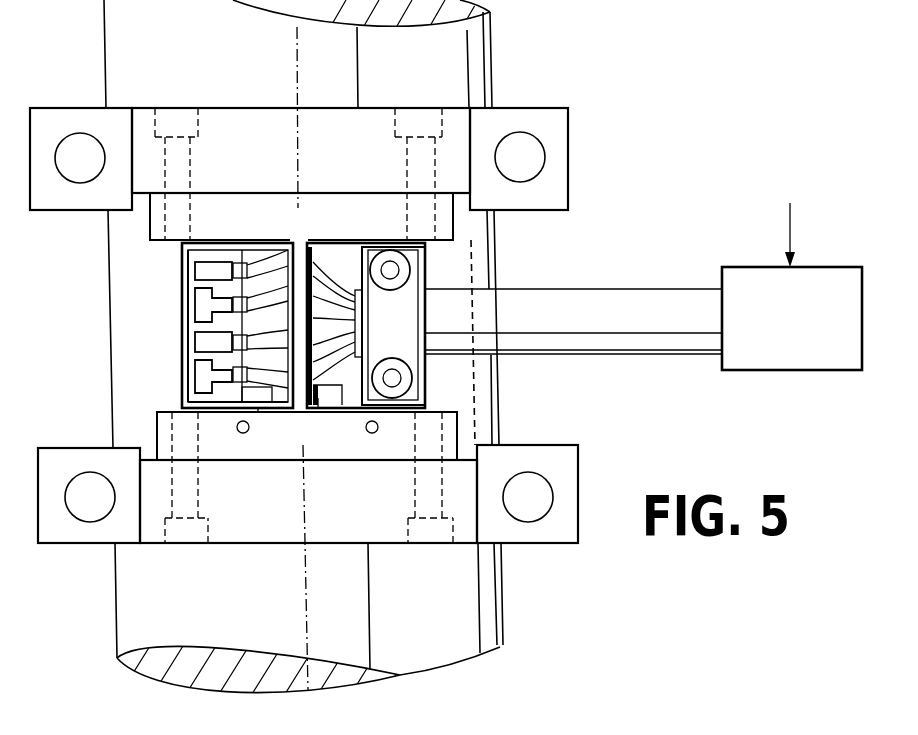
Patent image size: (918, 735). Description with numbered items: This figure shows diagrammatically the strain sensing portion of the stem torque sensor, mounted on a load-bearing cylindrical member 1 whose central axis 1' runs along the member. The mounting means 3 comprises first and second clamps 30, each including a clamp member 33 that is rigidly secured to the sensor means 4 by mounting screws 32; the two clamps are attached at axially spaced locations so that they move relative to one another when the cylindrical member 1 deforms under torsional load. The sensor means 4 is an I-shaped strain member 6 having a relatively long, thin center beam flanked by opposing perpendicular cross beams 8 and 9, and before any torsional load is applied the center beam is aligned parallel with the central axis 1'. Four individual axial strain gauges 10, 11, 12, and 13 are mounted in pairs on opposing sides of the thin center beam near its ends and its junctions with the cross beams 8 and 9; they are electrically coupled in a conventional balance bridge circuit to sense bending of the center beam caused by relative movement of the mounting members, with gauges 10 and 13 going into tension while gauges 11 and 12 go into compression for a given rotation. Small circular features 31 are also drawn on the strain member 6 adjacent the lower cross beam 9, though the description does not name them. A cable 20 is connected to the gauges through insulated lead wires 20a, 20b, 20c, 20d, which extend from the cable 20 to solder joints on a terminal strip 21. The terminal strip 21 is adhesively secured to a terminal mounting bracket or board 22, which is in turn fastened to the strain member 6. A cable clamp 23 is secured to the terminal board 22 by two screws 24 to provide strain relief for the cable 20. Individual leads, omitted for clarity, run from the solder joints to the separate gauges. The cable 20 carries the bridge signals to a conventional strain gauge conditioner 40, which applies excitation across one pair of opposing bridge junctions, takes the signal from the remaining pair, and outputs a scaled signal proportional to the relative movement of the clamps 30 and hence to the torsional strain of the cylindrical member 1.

The cylindrical member 1 is at (331, 355).
The central axis 1' is at (327, 358).
The mounting means 3 is at (125, 154).
The sensor means 4 is at (234, 200).
The strain member 6 is at (286, 456).
The cross beam 8 is at (346, 223).
The cross beam 9 is at (356, 448).
The strain gauge 10 is at (289, 250).
The strain gauge 11 is at (328, 256).
The strain gauge 12 is at (274, 428).
The strain gauge 13 is at (318, 398).
The cable 20 is at (602, 307).
The lead wire 20a is at (188, 270).
The lead wire 20b is at (188, 306).
The lead wire 20c is at (188, 343).
The lead wire 20d is at (188, 380).
The terminal strip 21 is at (187, 285).
The terminal mounting bracket 22 is at (185, 393).
The cable clamp 23 is at (414, 355).
The screws 24 is at (395, 266).
The clamp 30 is at (582, 168).
The locating pin 31 is at (243, 434).
The mounting screws 32 is at (183, 112).
The clamp member 33 is at (354, 178).
The signal conditioner 40 is at (812, 267).